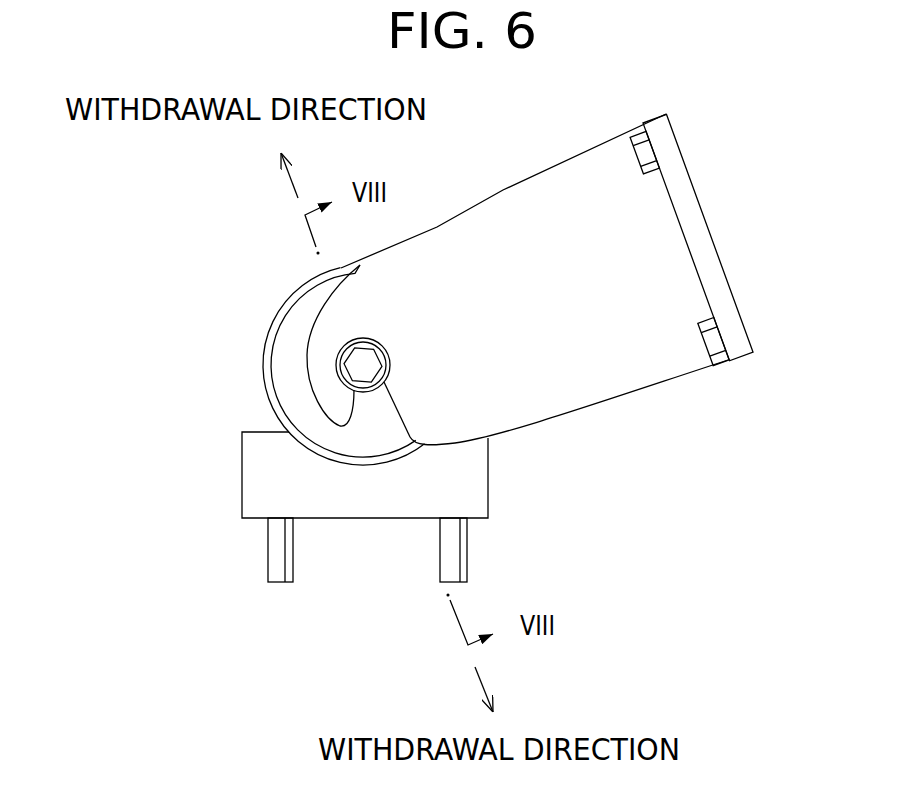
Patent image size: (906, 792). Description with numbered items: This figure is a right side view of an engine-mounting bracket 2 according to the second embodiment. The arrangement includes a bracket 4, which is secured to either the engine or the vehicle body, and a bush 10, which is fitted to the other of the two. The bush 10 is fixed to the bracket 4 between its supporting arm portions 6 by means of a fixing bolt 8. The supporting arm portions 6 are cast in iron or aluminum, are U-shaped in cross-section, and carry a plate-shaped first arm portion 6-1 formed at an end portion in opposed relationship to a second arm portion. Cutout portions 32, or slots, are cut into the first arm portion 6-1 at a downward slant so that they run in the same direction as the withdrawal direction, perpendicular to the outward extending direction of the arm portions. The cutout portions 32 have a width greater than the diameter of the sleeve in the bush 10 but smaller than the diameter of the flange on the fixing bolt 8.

The engine-mounting bracket 2 is at (717, 105).
The bracket 4 is at (705, 193).
The supporting arm portions 6 is at (503, 186).
The first arm portion 6-1 is at (435, 242).
The fixing bolt 8 is at (367, 368).
The bush 10 is at (287, 343).
The cutout portions 32 is at (377, 412).